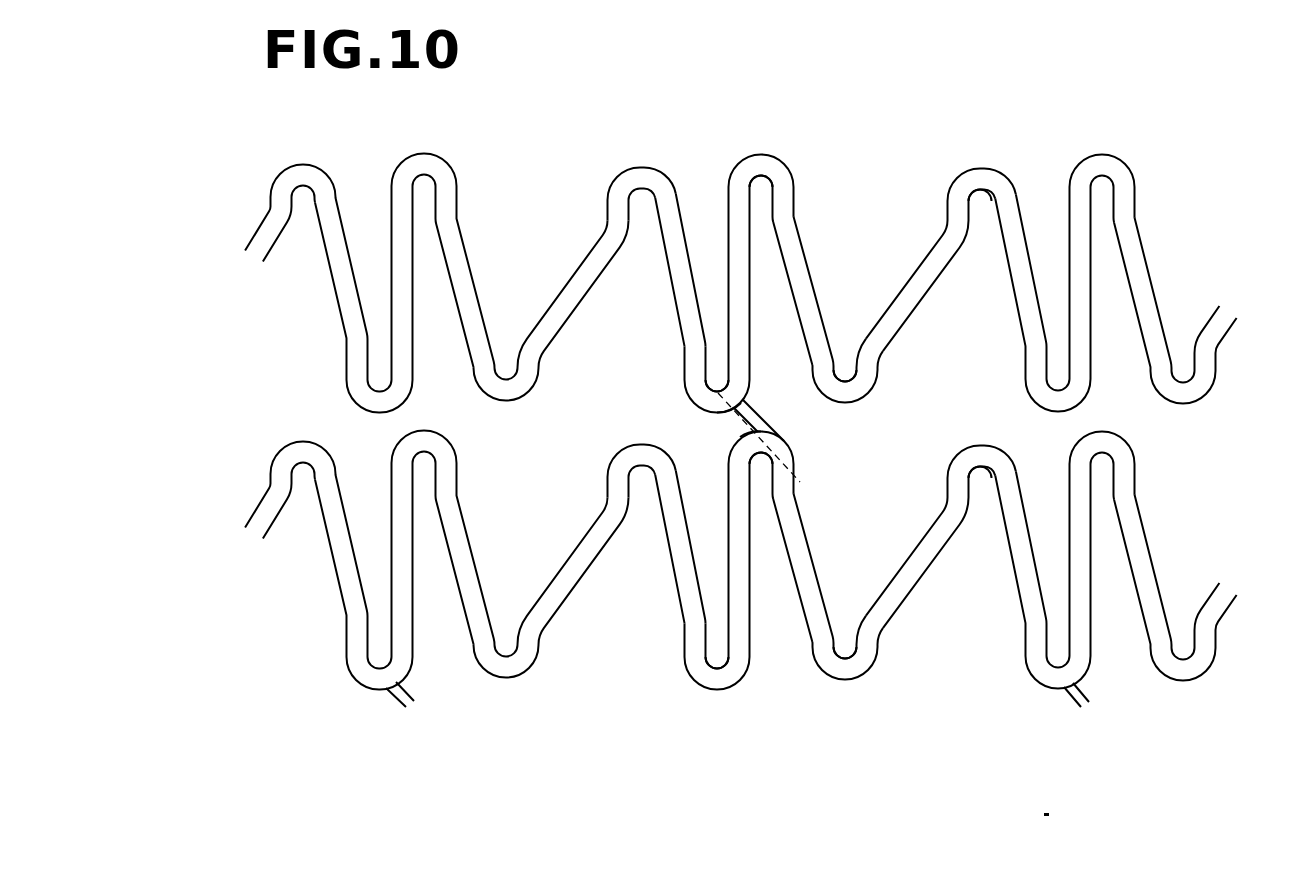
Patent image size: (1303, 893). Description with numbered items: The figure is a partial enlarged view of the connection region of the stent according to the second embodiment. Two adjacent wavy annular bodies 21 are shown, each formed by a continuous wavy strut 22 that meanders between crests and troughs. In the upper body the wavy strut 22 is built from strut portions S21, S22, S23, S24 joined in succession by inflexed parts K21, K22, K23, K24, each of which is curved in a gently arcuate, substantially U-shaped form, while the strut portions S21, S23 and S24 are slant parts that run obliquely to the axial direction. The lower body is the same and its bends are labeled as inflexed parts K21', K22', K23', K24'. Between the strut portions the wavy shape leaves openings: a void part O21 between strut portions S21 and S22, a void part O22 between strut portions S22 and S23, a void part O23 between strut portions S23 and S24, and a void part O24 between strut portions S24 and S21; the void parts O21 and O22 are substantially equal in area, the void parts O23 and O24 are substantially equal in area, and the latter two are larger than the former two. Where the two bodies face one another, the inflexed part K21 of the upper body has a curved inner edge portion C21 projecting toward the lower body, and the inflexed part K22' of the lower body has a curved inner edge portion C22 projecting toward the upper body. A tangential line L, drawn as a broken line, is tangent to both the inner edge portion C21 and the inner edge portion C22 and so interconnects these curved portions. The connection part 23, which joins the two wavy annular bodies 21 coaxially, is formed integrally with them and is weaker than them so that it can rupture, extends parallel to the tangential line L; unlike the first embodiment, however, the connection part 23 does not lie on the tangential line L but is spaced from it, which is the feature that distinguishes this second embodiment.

The wavy strut 22 is at (266, 213).
The wavy annular body 21 is at (252, 338).
The strut portion S21 is at (676, 257).
The strut portion S22 is at (741, 277).
The strut portion S23 is at (807, 290).
The strut portion S24 is at (917, 263).
The inflexed part K21 is at (848, 402).
The inflexed part K22 is at (936, 150).
The inflexed part K23 is at (699, 397).
The inflexed part K24 is at (796, 149).
The inflexed part K21' is at (879, 690).
The inflexed part K22' is at (902, 465).
The inflexed part K23' is at (678, 687).
The inflexed part K24' is at (771, 455).
The void part O21 is at (712, 280).
The void part O22 is at (772, 312).
The void part O23 is at (852, 263).
The void part O24 is at (970, 300).
The inner edge portion C21 is at (725, 386).
The inner edge portion C22 is at (760, 459).
The connection part 23 is at (770, 420).
The tangential line L is at (797, 461).